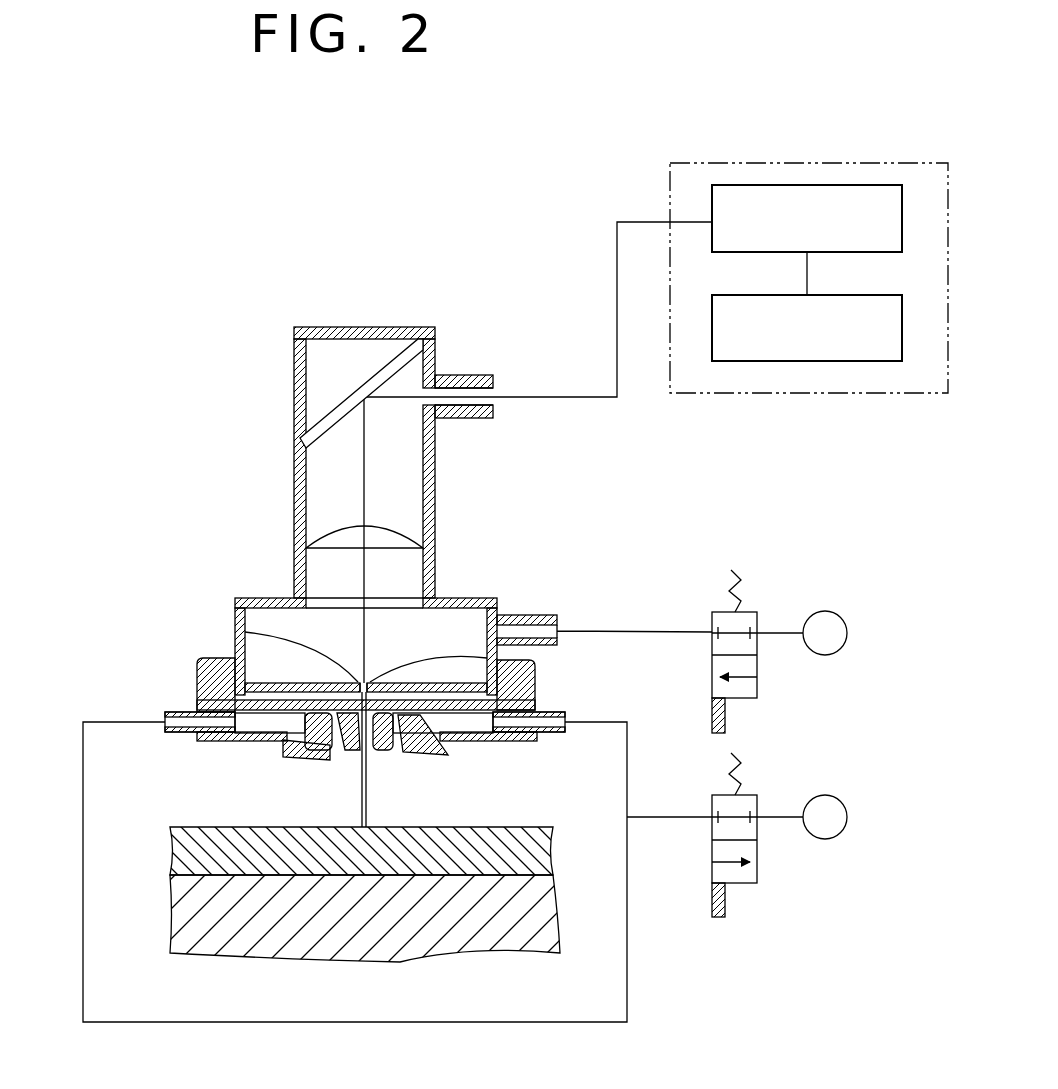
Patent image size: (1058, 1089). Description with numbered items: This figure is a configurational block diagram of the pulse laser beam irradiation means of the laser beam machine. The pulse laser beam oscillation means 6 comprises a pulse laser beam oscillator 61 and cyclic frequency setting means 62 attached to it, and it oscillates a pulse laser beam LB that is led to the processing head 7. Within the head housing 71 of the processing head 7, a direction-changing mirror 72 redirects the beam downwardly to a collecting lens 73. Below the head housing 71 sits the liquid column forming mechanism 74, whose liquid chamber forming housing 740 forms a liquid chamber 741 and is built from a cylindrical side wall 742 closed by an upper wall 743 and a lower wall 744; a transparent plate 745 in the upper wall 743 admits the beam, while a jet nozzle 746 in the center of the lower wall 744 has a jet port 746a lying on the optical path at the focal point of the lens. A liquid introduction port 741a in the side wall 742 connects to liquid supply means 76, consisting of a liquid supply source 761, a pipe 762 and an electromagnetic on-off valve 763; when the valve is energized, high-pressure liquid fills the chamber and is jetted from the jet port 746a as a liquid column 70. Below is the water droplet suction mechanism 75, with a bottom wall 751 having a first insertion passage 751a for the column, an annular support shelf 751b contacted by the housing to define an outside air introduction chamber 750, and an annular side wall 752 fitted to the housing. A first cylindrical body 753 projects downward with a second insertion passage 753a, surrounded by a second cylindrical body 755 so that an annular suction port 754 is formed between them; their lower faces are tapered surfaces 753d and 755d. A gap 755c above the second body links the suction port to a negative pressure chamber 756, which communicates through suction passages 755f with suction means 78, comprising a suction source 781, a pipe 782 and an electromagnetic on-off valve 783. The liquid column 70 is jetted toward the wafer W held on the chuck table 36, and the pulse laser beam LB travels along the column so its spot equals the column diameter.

The pulse laser beam oscillation means 6 is at (852, 162).
The pulse laser beam oscillator 61 is at (800, 185).
The cyclic frequency setting means 62 is at (800, 361).
The pulse laser beam LB is at (545, 394).
The processing head 7 is at (240, 440).
The head housing 71 is at (294, 478).
The direction-changing mirror 72 is at (298, 410).
The collecting lens 73 is at (308, 530).
The liquid column forming mechanism 74 is at (527, 582).
The liquid chamber forming housing 740 is at (474, 596).
The liquid chamber 741 is at (287, 625).
The liquid introduction port 741a is at (516, 615).
The side wall 742 is at (236, 622).
The upper wall 743 is at (445, 597).
The lower wall 744 is at (505, 663).
The transparent plate 745 is at (298, 560).
The jet nozzle 746 is at (237, 640).
The jet port 746a is at (386, 683).
The water droplet suction mechanism 75 is at (186, 694).
The outside air introduction chamber 750 is at (240, 701).
The bottom wall 751 is at (197, 679).
The first insertion passage 751a is at (360, 683).
The annular support shelf 751b is at (535, 691).
The annular side wall 752 is at (197, 666).
The first cylindrical body 753 is at (410, 760).
The second insertion passage 753a is at (420, 746).
The tapered surface 753d is at (330, 813).
The annular suction port 754 is at (272, 742).
The second cylindrical body 755 is at (284, 757).
The gap 755c is at (233, 658).
The tapered surface 755d is at (340, 753).
The suction passage 755f is at (165, 723).
The negative pressure chamber 756 is at (262, 744).
The liquid column 70 is at (378, 683).
The wafer W is at (172, 851).
The chuck table 36 is at (186, 920).
The liquid supply means 76 is at (868, 600).
The liquid supply source 761 is at (831, 611).
The pipe 762 is at (787, 632).
The electromagnetic on-off valve 763 is at (760, 686).
The suction means 78 is at (868, 790).
The suction source 781 is at (831, 795).
The pipe 782 is at (787, 816).
The electromagnetic on-off valve 783 is at (760, 868).